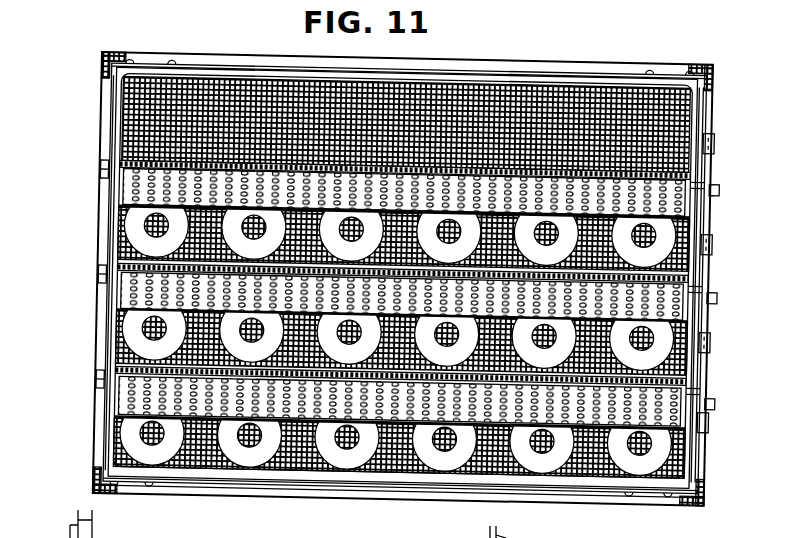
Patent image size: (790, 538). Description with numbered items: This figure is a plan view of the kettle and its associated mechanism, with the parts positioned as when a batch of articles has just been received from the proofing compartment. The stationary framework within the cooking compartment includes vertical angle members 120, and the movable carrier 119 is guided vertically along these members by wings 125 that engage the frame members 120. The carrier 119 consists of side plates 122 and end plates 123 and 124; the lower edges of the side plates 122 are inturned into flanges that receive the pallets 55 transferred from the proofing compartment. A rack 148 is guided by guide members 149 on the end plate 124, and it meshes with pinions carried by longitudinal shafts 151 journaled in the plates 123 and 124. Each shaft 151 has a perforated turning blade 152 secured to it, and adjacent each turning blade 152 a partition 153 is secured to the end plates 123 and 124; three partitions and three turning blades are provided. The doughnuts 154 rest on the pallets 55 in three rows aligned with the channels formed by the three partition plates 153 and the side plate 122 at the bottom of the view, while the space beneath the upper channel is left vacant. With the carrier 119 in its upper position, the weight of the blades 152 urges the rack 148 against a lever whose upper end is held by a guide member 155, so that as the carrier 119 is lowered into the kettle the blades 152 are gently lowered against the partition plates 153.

The pallet 55 is at (122, 101).
The movable carrier 119 is at (558, 492).
The vertical angle member 120 is at (100, 64).
The side plate 122 is at (497, 76).
The end plate 123 is at (108, 306).
The end plate 124 is at (716, 148).
The wing 125 is at (112, 52).
The rack 148 is at (708, 366).
The guide member 149 is at (718, 336).
The longitudinal shaft 151 is at (108, 178).
The perforated turning blade 152 is at (135, 196).
The partition 153 is at (682, 212).
The doughnut 154 is at (136, 230).
The guide member 155 is at (190, 537).